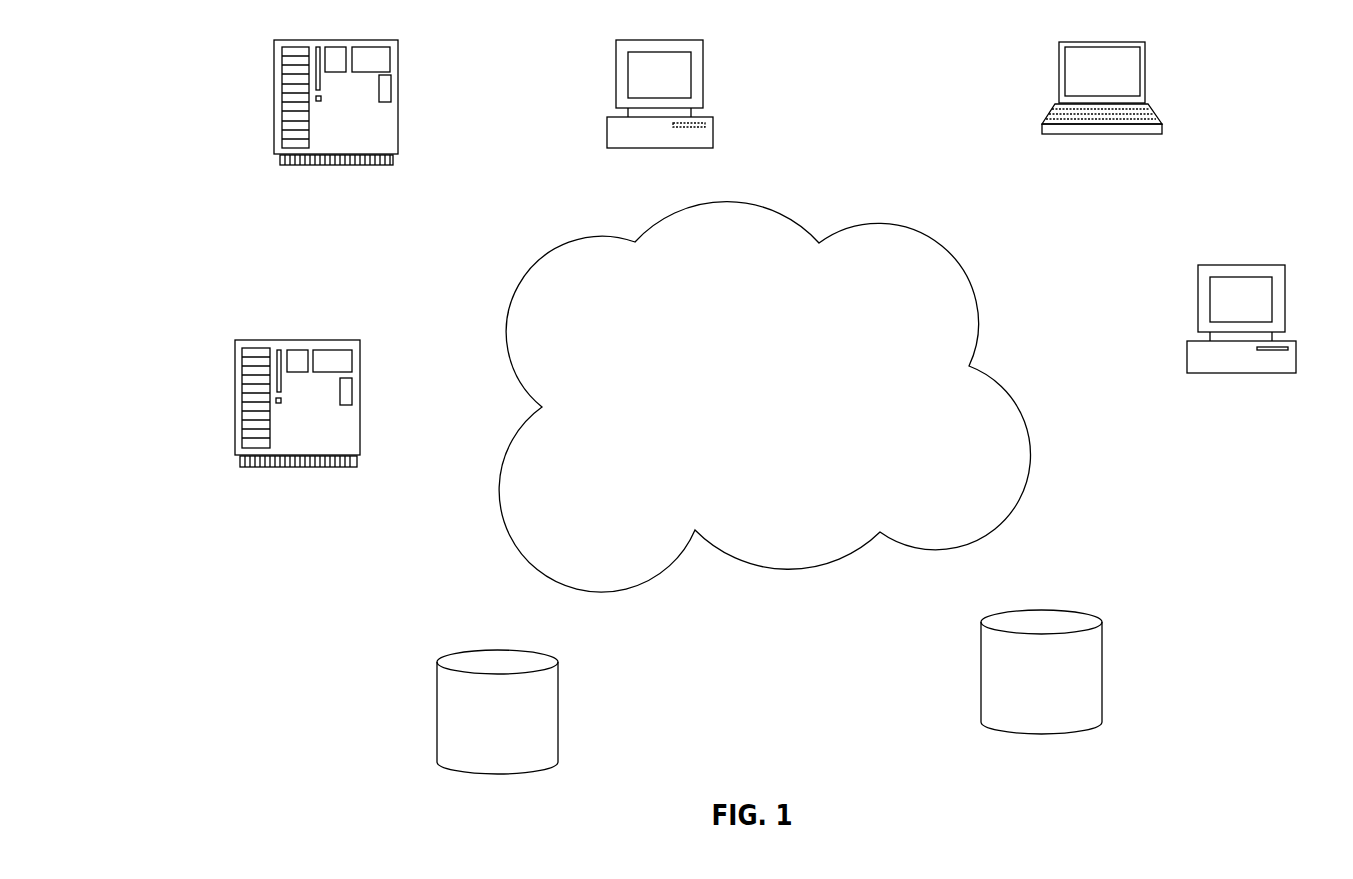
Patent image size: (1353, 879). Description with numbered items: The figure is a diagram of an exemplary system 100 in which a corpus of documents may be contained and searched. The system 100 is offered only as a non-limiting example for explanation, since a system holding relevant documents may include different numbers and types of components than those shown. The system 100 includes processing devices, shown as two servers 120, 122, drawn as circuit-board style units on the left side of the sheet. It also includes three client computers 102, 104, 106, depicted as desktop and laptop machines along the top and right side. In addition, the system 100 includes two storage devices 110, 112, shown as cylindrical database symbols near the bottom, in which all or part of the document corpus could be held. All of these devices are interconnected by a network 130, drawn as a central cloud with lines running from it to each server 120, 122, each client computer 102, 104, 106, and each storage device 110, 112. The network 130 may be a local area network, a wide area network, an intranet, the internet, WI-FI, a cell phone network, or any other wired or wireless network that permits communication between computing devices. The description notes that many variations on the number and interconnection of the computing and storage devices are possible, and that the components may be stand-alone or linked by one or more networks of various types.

The system 100 is at (147, 76).
The client computer 102 is at (690, 207).
The client computer 104 is at (940, 237).
The client computer 106 is at (969, 366).
The storage device 110 is at (598, 548).
The storage device 112 is at (928, 530).
The server 120 is at (555, 248).
The server 122 is at (542, 407).
The network 130 is at (764, 397).